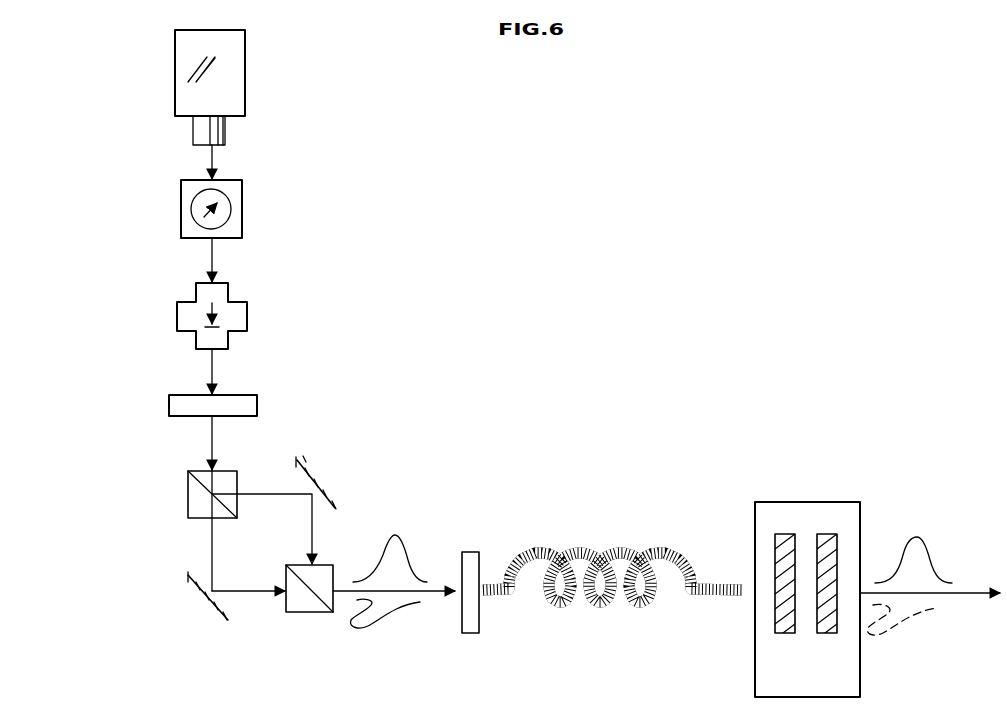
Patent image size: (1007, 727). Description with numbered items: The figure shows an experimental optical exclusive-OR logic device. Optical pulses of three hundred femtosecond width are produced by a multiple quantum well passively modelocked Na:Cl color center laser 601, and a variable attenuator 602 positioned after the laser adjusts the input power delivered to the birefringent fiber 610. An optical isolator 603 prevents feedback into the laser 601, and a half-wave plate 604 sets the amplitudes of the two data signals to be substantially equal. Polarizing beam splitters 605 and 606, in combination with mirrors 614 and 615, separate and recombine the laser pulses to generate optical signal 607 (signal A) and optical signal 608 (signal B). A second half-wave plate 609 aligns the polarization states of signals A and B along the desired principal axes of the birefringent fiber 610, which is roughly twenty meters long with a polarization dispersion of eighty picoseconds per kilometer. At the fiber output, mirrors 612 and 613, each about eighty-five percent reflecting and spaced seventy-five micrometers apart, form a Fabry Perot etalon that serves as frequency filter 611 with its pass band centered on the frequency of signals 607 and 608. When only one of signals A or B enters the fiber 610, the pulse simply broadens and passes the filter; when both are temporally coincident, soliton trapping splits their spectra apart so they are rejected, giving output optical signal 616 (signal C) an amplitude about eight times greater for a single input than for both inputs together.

The multiple quantum well passively modelocked Na:Cl color center laser 601 is at (245, 103).
The variable attenuator 602 is at (242, 209).
The optical isolator 603 is at (247, 303).
The half-wave plate 604 is at (257, 395).
The polarizing beam splitter 605 is at (232, 471).
The polarizing beam splitter 606 is at (292, 612).
The optical signal (signal A) 607 is at (404, 535).
The optical signal (signal B) 608 is at (371, 642).
The half-wave plate 609 is at (479, 552).
The birefringent fiber 610 is at (590, 543).
The frequency filter 611 is at (782, 502).
The mirror 612 is at (783, 583).
The mirror 613 is at (827, 583).
The mirror 614 is at (212, 614).
The mirror 615 is at (301, 462).
The optical signal (signal C) 616 is at (922, 564).